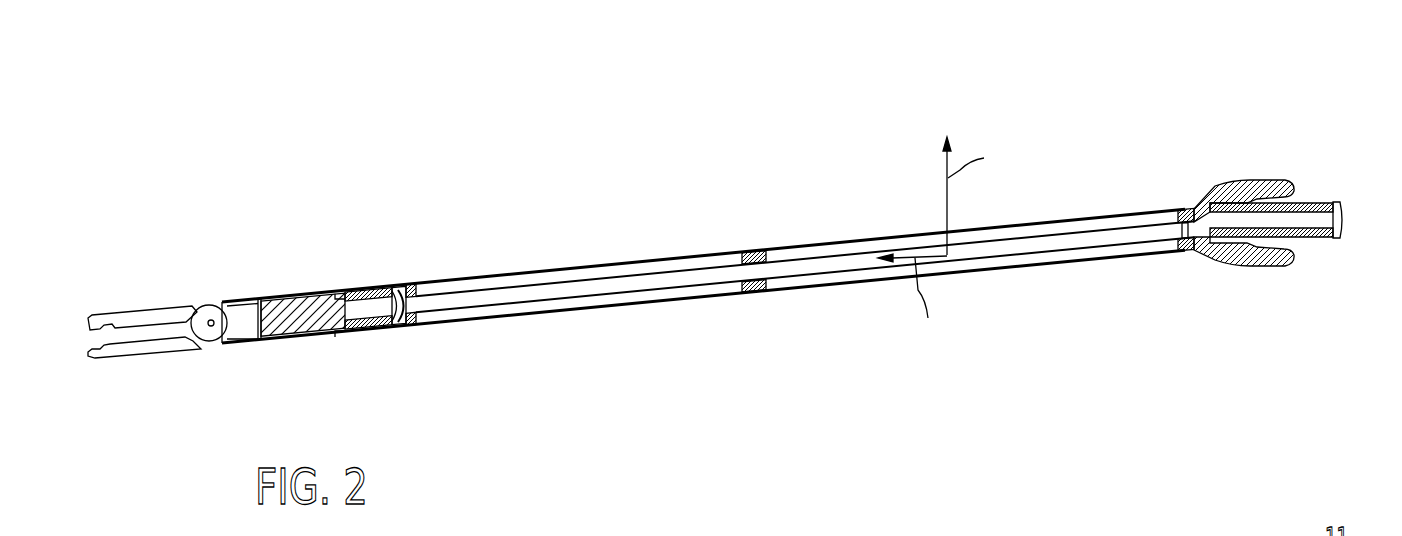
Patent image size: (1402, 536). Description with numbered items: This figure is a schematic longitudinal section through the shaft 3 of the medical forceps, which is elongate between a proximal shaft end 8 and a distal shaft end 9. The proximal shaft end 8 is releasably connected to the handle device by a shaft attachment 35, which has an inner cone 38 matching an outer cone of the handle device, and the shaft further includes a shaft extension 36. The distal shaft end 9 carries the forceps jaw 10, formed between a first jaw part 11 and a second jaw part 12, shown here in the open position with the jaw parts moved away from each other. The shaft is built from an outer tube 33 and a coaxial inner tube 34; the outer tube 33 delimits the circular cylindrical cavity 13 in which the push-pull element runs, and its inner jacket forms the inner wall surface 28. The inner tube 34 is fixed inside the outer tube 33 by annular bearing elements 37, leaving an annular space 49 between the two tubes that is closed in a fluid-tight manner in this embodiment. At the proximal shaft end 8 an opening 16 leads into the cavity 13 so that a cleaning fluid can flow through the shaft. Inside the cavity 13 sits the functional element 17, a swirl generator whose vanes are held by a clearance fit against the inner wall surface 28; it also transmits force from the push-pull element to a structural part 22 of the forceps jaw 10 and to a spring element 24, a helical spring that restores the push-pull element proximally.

The shaft 3 is at (735, 236).
The proximal shaft end 8 is at (1288, 191).
The distal shaft end 9 is at (197, 289).
The forceps jaw 10 is at (157, 309).
The first jaw part 11 is at (122, 312).
The second jaw part 12 is at (128, 346).
The cavity 13 is at (805, 288).
The opening 16 is at (1341, 212).
The functional element 17 is at (400, 284).
The structural part 22 is at (292, 330).
The spring element 24 is at (358, 324).
The inner wall surface 28 is at (703, 263).
The outer tube 33 is at (822, 243).
The inner tube 34 is at (824, 285).
The shaft attachment 35 is at (1202, 194).
The shaft extension 36 is at (1250, 267).
The bearing elements 37 is at (415, 321).
The inner cone 38 is at (1300, 190).
The annular space 49 is at (634, 262).